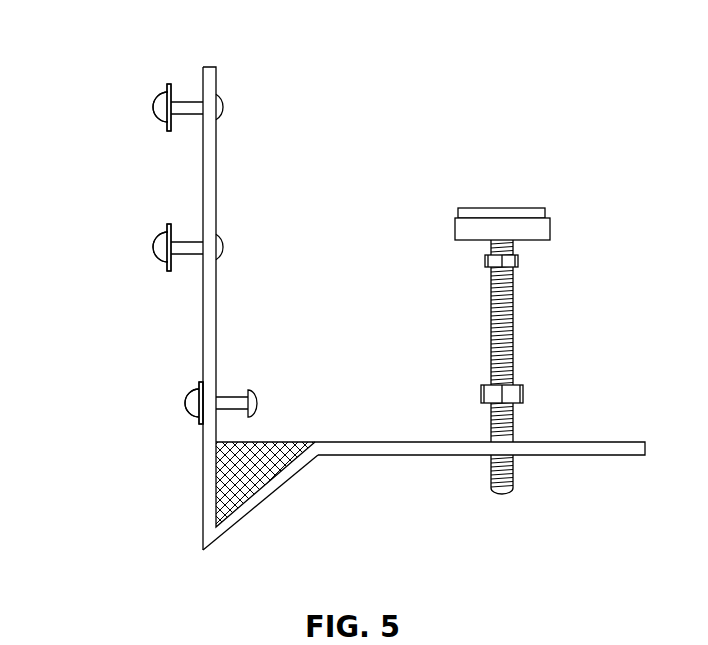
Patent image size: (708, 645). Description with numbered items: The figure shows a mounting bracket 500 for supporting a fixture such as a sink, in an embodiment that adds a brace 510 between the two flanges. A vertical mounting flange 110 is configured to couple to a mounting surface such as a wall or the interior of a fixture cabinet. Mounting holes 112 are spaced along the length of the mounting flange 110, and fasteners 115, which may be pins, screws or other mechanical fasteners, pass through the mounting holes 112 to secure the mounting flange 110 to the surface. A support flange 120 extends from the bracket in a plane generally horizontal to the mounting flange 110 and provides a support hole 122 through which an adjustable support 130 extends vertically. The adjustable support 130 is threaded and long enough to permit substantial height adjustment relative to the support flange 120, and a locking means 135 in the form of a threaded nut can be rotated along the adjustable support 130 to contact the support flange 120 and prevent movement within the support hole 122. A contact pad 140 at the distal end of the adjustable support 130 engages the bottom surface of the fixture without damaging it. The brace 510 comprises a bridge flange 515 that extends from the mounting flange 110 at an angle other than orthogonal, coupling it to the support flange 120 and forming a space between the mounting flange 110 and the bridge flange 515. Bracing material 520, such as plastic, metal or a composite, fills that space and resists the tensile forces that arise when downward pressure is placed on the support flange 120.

The mounting bracket 500 is at (80, 61).
The mounting flange 110 is at (211, 66).
The mounting hole 112 is at (242, 367).
The fastener 115 is at (169, 399).
The support flange 120 is at (608, 443).
The support hole 122 is at (478, 469).
The adjustable support 130 is at (541, 359).
The locking means 135 is at (522, 396).
The contact pad 140 is at (492, 212).
The brace 510 is at (176, 541).
The bridge flange 515 is at (238, 514).
The bracing material 520 is at (290, 468).